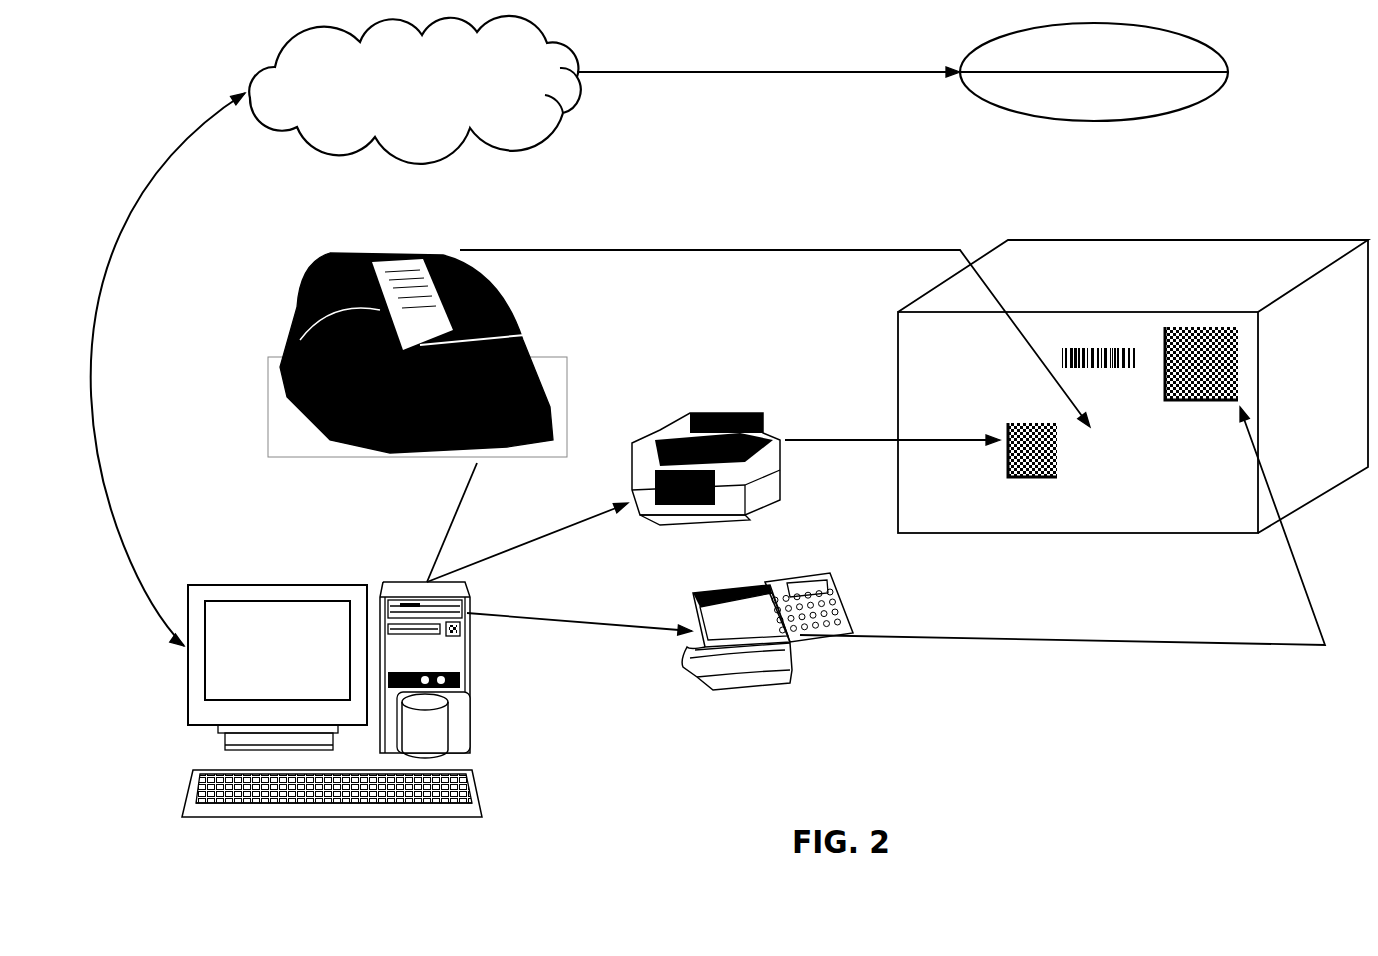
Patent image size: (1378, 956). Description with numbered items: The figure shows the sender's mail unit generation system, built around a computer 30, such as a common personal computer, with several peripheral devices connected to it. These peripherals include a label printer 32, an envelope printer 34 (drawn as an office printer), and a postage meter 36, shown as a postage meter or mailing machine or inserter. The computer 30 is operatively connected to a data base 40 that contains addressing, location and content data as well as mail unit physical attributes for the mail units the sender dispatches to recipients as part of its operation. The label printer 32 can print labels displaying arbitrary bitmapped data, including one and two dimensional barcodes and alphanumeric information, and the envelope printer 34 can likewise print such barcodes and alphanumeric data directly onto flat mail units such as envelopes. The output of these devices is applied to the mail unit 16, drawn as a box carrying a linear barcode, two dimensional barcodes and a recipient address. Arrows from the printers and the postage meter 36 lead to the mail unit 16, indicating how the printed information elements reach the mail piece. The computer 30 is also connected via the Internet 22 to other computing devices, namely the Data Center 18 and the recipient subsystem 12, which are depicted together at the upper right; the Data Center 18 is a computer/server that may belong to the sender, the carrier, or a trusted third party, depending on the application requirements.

The recipient subsystem 12 is at (1175, 113).
The mail unit 16 is at (1070, 237).
The Data Center 18 is at (1207, 40).
The Internet 22 is at (565, 92).
The computer 30 is at (146, 727).
The label printer 32 is at (305, 272).
The envelope printer 34 is at (778, 466).
The postage meter 36 is at (752, 675).
The data base 40 is at (433, 733).